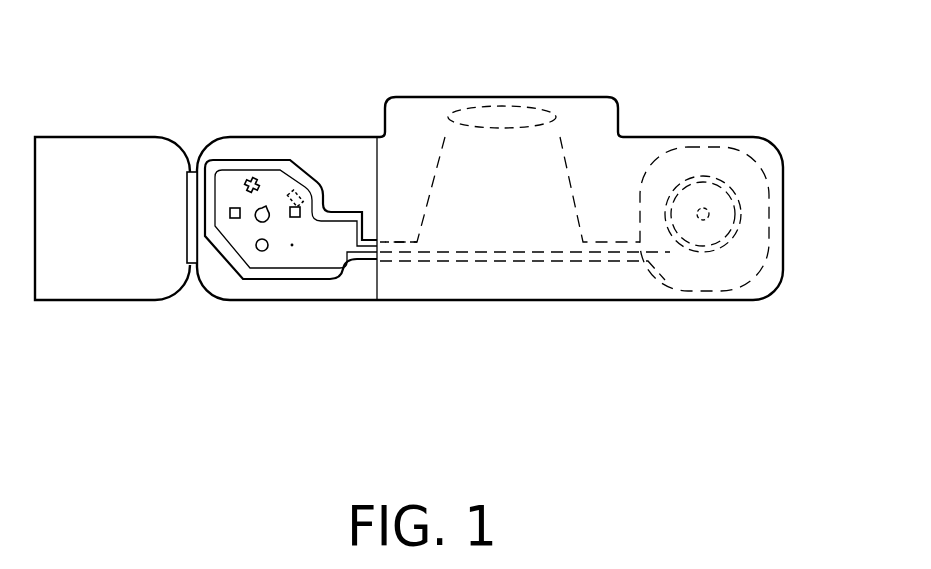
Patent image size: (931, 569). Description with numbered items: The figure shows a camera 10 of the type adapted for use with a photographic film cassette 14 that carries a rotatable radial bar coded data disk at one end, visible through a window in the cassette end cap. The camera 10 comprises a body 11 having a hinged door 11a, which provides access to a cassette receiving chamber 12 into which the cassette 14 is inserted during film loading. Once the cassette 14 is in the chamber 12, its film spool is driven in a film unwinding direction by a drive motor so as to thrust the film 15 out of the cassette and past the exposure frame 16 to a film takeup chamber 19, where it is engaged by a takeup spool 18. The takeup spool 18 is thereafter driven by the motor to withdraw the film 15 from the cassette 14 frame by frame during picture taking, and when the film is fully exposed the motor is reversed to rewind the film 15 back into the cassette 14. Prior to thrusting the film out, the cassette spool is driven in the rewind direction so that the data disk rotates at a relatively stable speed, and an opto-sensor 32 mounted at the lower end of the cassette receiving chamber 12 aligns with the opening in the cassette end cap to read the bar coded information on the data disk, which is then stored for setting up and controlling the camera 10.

The camera 10 is at (700, 59).
The body 11 is at (725, 137).
The hinged door 11a is at (100, 137).
The cassette receiving chamber 12 is at (252, 160).
The photographic film cassette 14 is at (226, 176).
The film 15 is at (377, 273).
The exposure frame 16 is at (518, 202).
The takeup spool 18 is at (787, 273).
The film takeup chamber 19 is at (750, 194).
The opto-sensor 32 is at (290, 200).